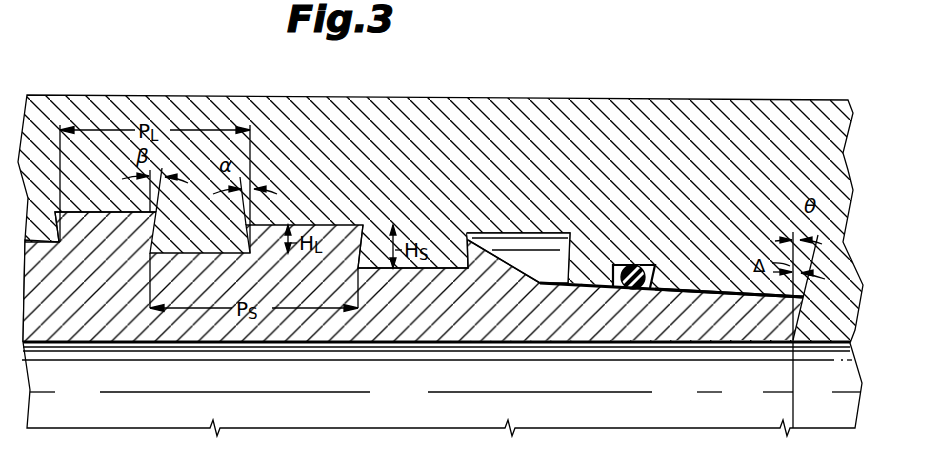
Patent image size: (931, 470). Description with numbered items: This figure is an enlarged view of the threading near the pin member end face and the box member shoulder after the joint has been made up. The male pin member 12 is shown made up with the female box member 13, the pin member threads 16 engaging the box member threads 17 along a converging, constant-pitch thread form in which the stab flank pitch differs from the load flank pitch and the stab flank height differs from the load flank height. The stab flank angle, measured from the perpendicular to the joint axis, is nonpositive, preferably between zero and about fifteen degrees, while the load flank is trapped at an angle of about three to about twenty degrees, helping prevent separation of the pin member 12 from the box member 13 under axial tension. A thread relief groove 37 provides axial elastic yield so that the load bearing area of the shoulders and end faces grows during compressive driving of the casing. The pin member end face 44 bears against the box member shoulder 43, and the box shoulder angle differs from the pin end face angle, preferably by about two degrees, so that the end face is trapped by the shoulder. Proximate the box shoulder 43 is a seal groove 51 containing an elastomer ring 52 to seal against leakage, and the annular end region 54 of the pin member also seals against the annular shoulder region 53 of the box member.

The pin member 12 is at (410, 325).
The box member 13 is at (527, 125).
The pin member threads 16 is at (97, 265).
The box member threads 17 is at (455, 252).
The thread relief groove 37 is at (558, 247).
The box member shoulder 43 is at (797, 323).
The pin member end face 44 is at (767, 345).
The seal groove 51 is at (650, 263).
The elastomer ring 52 is at (626, 263).
The annular shoulder region of the box member 53 is at (700, 273).
The annular end region of the pin member 54 is at (690, 291).